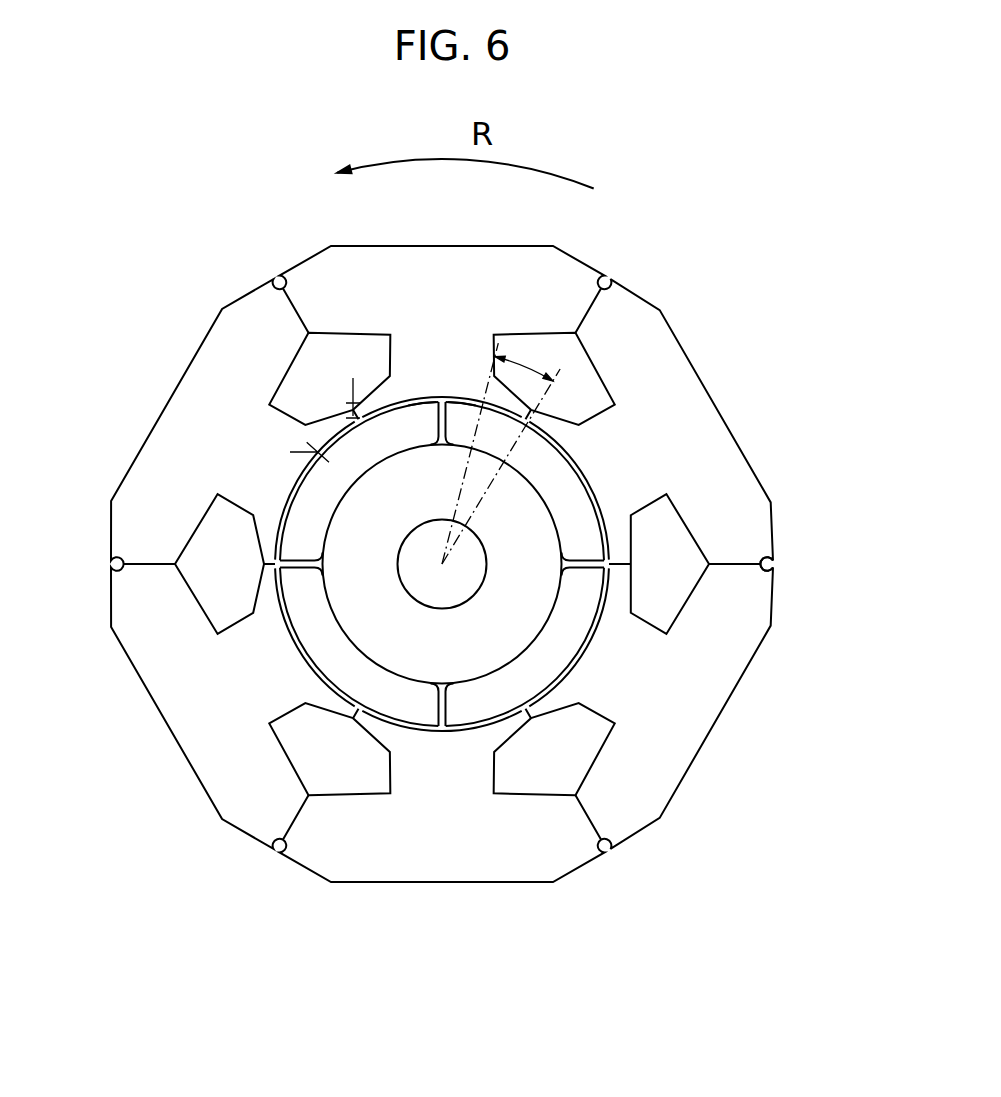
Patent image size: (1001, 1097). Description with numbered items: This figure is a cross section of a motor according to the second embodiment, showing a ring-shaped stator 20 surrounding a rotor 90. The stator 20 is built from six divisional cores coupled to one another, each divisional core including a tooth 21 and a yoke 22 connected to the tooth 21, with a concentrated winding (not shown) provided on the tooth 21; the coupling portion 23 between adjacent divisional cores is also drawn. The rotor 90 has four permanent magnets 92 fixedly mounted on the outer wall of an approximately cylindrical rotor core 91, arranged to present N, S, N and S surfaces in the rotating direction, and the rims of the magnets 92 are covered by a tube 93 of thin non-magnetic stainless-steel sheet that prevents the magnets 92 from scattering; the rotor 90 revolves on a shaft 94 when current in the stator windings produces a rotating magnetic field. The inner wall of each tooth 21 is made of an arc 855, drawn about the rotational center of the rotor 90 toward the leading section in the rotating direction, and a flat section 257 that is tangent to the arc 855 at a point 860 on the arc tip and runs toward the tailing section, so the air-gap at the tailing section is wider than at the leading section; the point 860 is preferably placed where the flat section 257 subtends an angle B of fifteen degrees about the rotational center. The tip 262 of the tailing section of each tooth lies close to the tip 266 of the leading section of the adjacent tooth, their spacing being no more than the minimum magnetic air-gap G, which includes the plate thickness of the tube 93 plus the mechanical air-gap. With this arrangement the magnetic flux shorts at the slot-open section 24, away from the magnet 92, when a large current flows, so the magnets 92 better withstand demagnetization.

The stator 20 is at (476, 539).
The tooth 21 is at (612, 468).
The yoke 22 is at (726, 470).
The joint notch between core segments 23 is at (768, 573).
The slot-open section 24 is at (624, 571).
The tip of leading section 266 is at (536, 413).
The flat section 257 is at (488, 375).
The tip of tailing section 262 is at (530, 410).
The arc 855 is at (430, 397).
The point 860 is at (465, 392).
The rotor 90 is at (341, 552).
The rotor core 91 is at (375, 630).
The permanent magnet 92 is at (477, 708).
The tube 93 is at (532, 713).
The shaft 94 is at (423, 577).